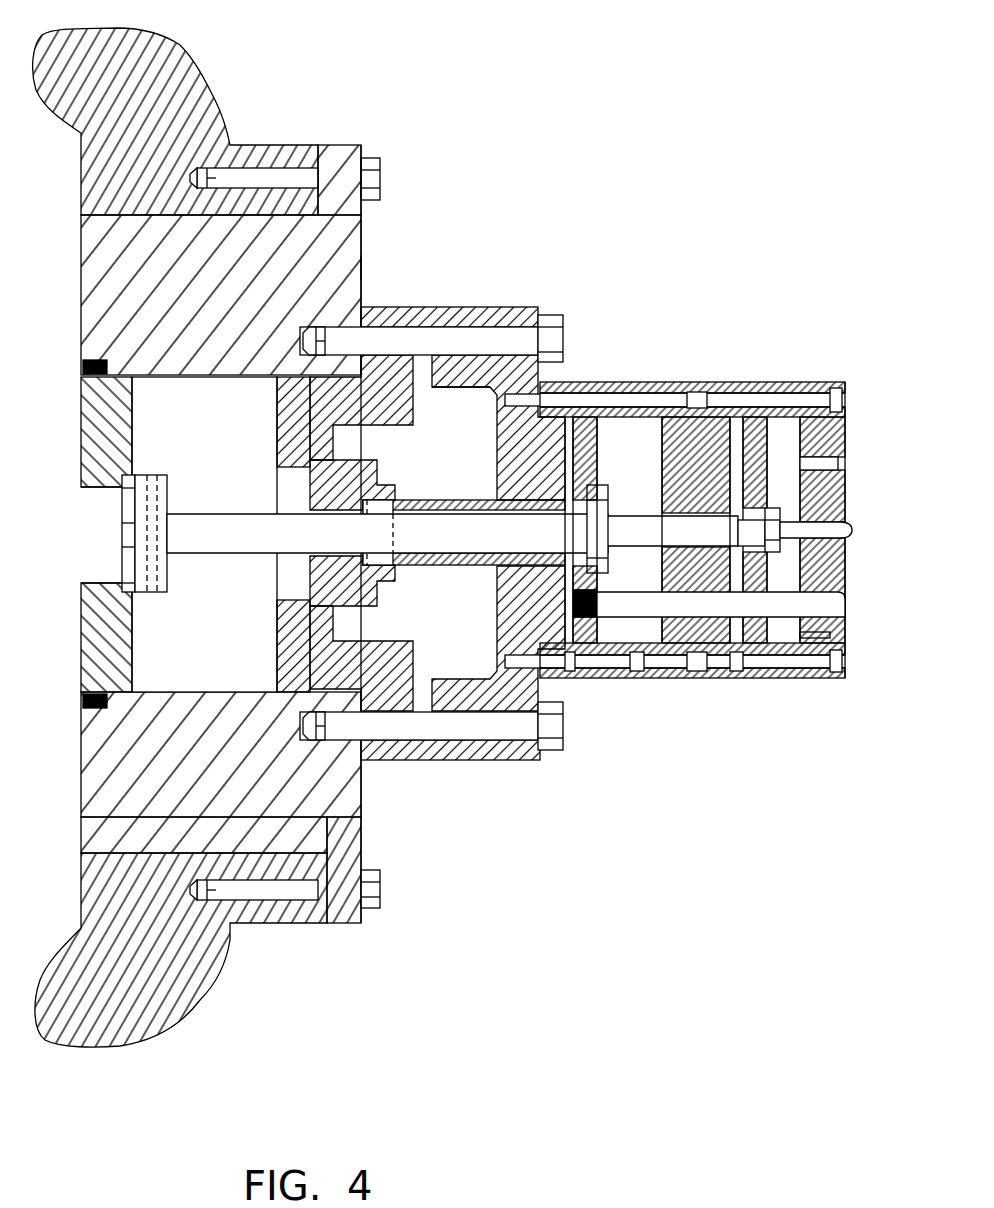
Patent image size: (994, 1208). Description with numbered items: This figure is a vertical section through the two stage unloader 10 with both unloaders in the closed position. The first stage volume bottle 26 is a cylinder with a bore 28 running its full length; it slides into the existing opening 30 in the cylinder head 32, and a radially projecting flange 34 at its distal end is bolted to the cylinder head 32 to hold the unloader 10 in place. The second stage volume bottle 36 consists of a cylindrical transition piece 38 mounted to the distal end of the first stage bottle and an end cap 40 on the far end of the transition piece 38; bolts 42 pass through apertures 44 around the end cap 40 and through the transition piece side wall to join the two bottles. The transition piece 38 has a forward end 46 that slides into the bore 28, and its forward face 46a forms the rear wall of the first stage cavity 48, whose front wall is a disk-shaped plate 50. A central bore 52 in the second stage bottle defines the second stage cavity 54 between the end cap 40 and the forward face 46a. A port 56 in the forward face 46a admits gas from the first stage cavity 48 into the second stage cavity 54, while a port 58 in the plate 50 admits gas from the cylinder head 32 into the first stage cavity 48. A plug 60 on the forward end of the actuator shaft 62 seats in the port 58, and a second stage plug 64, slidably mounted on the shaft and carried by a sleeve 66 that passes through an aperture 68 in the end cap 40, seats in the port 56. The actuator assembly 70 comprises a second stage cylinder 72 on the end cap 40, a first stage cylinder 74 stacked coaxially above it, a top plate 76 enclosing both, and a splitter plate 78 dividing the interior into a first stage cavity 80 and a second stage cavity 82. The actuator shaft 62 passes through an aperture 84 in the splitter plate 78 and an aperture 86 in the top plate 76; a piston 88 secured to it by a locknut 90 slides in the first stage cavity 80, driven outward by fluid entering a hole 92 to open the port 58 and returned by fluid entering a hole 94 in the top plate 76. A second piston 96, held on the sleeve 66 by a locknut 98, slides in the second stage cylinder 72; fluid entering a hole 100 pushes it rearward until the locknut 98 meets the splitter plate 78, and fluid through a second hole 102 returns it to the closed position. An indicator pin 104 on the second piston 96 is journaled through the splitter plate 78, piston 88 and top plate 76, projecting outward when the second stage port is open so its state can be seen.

The two stage unloader 10 is at (648, 186).
The first stage volume bottle 26 is at (328, 818).
The bore 28 is at (123, 742).
The opening 30 is at (110, 275).
The cylinder head 32 is at (187, 82).
The radially projecting flange 34 is at (345, 923).
The second stage volume bottle 36 is at (504, 292).
The transition piece 38 is at (428, 307).
The end cap 40 is at (543, 378).
The bolts 42 is at (563, 337).
The apertures 44 is at (517, 753).
The forward end 46 is at (285, 700).
The forward face 46a is at (277, 652).
The first stage cavity 48 is at (165, 617).
The disk-shaped plate 50 is at (172, 682).
The central bore 52 is at (452, 397).
The second stage cavity 54 is at (468, 425).
The port 56 is at (361, 268).
The port 58 is at (100, 535).
The plug 60 is at (163, 493).
The actuator shaft 62 is at (217, 533).
The second stage plug 64 is at (377, 597).
The sleeve 66 is at (425, 568).
The aperture 68 is at (737, 430).
The actuator assembly 70 is at (781, 735).
The second stage cylinder 72 is at (636, 425).
The first stage cylinder 74 is at (787, 382).
The top plate 76 is at (845, 493).
The splitter plate 78 is at (703, 680).
The first stage cavity 80 is at (792, 444).
The second stage cavity 82 is at (690, 412).
The aperture 84 is at (763, 571).
The aperture 86 is at (840, 523).
The piston 88 is at (847, 660).
The locknut 90 is at (845, 533).
The hole 92 is at (745, 672).
The hole 94 is at (840, 463).
The second piston 96 is at (638, 678).
The locknut 98 is at (598, 548).
The hole 100 is at (567, 680).
The second hole 102 is at (660, 680).
The indicator pin 104 is at (837, 602).